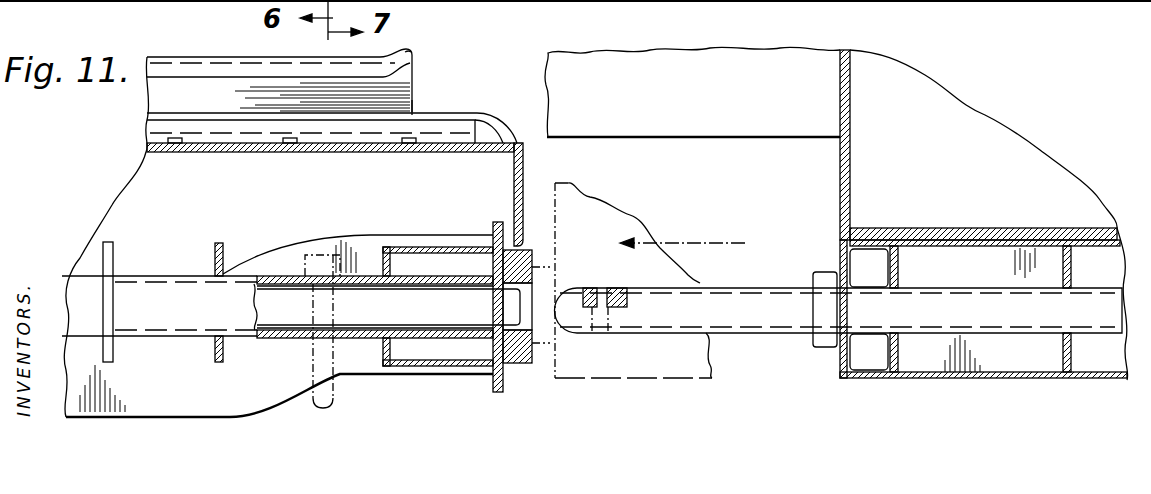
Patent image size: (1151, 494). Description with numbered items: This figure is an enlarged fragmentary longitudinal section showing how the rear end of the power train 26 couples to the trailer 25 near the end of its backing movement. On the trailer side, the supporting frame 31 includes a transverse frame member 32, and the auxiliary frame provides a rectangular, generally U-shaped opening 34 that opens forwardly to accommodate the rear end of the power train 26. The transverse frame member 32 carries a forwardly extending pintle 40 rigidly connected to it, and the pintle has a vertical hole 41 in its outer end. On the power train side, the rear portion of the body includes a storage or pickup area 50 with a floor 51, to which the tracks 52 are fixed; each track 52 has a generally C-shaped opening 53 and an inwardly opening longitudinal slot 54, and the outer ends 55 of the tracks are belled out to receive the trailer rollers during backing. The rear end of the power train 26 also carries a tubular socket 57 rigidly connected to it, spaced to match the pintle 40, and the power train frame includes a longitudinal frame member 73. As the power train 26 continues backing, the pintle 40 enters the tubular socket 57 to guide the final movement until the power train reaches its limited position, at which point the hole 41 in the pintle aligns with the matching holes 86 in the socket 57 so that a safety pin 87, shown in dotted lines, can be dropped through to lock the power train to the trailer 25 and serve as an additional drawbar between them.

The trailer 25 is at (830, 184).
The power train 26 is at (529, 154).
The supporting frame 31 is at (1044, 386).
The transverse frame member 32 is at (827, 371).
The opening 34 is at (850, 202).
The pintles 40 is at (266, 337).
The vertical hole 41 is at (330, 308).
The storage or pickup area 50 is at (441, 78).
The floor 51 is at (413, 152).
The tracks 52 is at (399, 46).
The C-shaped opening 53 is at (422, 98).
The longitudinal slot 54 is at (217, 80).
The outer ends 55 is at (412, 64).
The tubular sockets 57 is at (508, 363).
The longitudinal frame members 73 is at (215, 403).
The holes 86 is at (323, 290).
The safety pin 87 is at (317, 276).